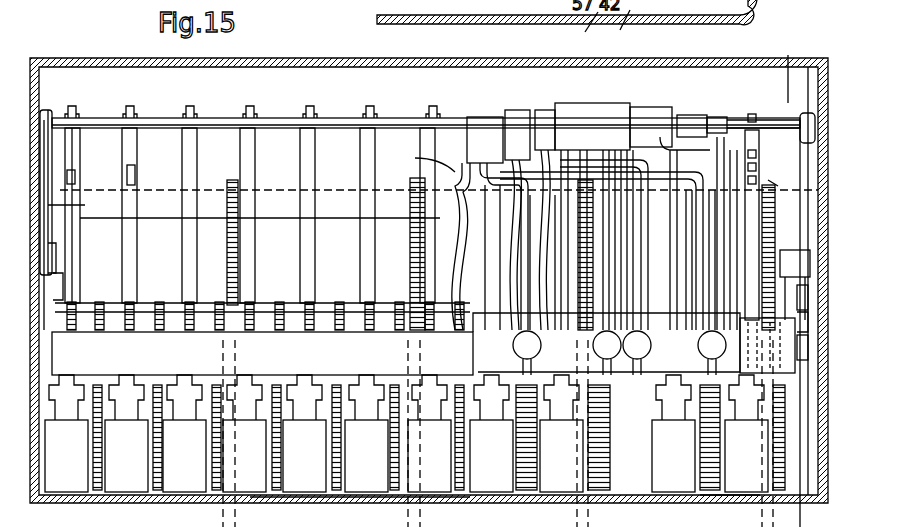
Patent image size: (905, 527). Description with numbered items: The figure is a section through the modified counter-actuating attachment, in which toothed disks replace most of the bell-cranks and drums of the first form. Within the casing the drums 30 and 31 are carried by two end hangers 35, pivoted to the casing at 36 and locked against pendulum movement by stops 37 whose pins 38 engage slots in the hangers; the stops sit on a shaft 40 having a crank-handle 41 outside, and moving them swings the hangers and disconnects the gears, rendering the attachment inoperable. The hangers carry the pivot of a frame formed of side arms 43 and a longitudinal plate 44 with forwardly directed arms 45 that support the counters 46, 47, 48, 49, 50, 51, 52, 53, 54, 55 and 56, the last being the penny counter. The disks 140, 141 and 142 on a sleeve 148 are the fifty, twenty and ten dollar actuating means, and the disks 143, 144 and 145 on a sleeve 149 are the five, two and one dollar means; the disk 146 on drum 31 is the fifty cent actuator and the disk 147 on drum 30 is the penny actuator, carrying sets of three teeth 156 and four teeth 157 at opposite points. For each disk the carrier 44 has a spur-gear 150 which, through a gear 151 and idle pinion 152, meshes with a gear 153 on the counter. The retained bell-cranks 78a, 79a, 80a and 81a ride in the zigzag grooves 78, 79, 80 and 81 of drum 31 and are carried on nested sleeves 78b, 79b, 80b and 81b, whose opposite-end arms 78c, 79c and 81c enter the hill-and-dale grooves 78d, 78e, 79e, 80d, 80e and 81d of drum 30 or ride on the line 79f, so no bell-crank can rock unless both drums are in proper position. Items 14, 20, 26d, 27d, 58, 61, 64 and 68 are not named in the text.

The section line 14 is at (792, 283).
The housing 20 is at (122, 60).
The rack 26d is at (751, 257).
The rack 27d is at (578, 222).
The drum 30 is at (671, 240).
The drum 31 is at (474, 257).
The end hanger 35 is at (54, 160).
The pivot 36 is at (57, 262).
The stop 37 is at (424, 112).
The pin 38 is at (582, 32).
The shaft 40 is at (118, 171).
The crank-handle 41 is at (811, 324).
The side arm 43 is at (62, 304).
The plate 44 is at (262, 353).
The forwardly directed arm 45 is at (492, 385).
The counter 46 is at (66, 433).
The counter 47 is at (126, 433).
The counter 48 is at (184, 433).
The counter 49 is at (244, 433).
The counter 50 is at (304, 433).
The counter 51 is at (366, 433).
The counter 52 is at (429, 433).
The counter 53 is at (491, 433).
The counter 54 is at (561, 433).
The counter 55 is at (598, 437).
The counter 56 is at (746, 433).
The base 58 is at (760, 520).
The rail 61 is at (284, 130).
The base plate 64 is at (308, 497).
The roller 68 is at (613, 376).
The cam groove 78 is at (546, 262).
The bell-crank 78a is at (728, 281).
The sleeve 78b is at (622, 108).
The arm 78c is at (601, 229).
The cam groove 78d is at (625, 212).
The cam groove 78e is at (636, 232).
The cam groove 79 is at (516, 245).
The bell-crank 79a is at (540, 178).
The sleeve 79b is at (548, 118).
The arm 79c is at (615, 226).
The cam groove 79e is at (612, 266).
The line 79f is at (685, 156).
The cam groove 80 is at (495, 280).
The bell-crank 80a is at (514, 236).
The sleeve 80b is at (522, 116).
The cam groove 80d is at (674, 260).
The cam groove 80e is at (706, 298).
The cam groove 81 is at (455, 215).
The bell-crank 81a is at (535, 297).
The sleeve 81b is at (492, 120).
The arm 81c is at (700, 222).
The cam groove 81d is at (744, 240).
The toothed disk 140 is at (80, 142).
The toothed disk 141 is at (138, 142).
The toothed disk 142 is at (197, 142).
The toothed disk 143 is at (256, 142).
The toothed disk 144 is at (316, 142).
The toothed disk 145 is at (376, 142).
The toothed disk 146 is at (437, 142).
The toothed disk 147 is at (750, 145).
The sleeve 148 is at (155, 232).
The sleeve 149 is at (335, 232).
The spur-gear 150 is at (362, 303).
The gear 151 is at (333, 331).
The idle pinion 152 is at (314, 425).
The gear 153 is at (272, 458).
The set of three teeth 156 is at (758, 116).
The set of four teeth 157 is at (758, 176).